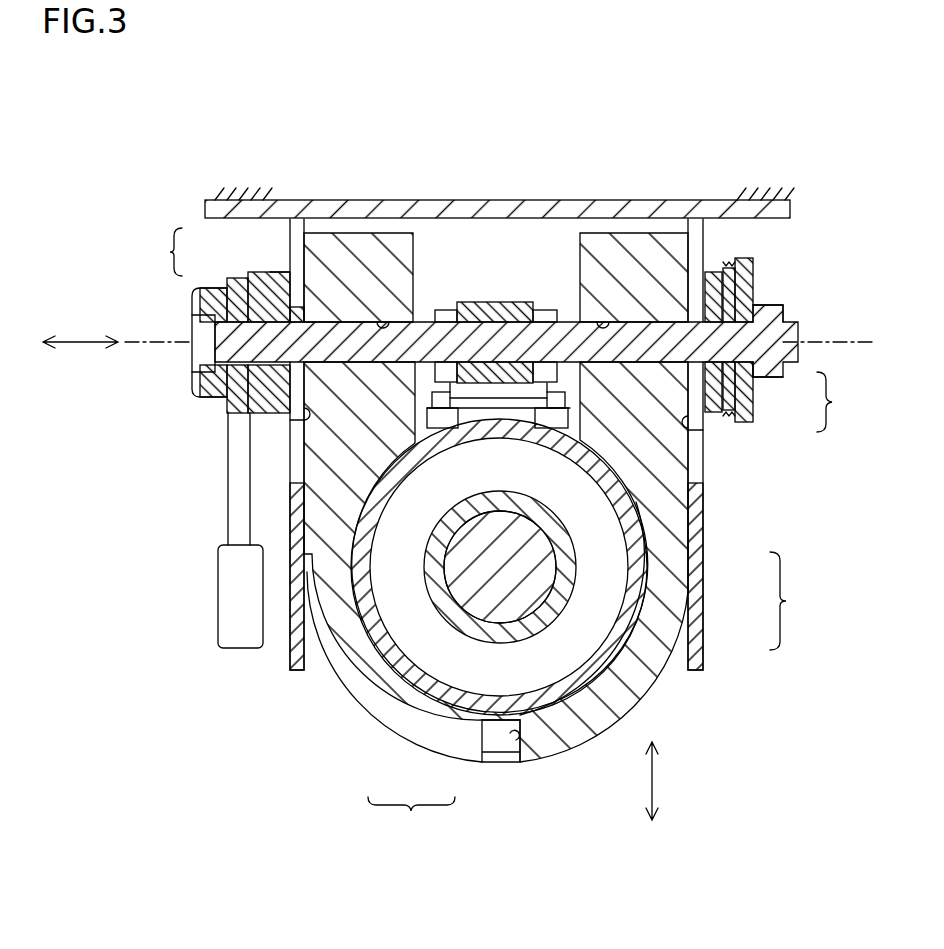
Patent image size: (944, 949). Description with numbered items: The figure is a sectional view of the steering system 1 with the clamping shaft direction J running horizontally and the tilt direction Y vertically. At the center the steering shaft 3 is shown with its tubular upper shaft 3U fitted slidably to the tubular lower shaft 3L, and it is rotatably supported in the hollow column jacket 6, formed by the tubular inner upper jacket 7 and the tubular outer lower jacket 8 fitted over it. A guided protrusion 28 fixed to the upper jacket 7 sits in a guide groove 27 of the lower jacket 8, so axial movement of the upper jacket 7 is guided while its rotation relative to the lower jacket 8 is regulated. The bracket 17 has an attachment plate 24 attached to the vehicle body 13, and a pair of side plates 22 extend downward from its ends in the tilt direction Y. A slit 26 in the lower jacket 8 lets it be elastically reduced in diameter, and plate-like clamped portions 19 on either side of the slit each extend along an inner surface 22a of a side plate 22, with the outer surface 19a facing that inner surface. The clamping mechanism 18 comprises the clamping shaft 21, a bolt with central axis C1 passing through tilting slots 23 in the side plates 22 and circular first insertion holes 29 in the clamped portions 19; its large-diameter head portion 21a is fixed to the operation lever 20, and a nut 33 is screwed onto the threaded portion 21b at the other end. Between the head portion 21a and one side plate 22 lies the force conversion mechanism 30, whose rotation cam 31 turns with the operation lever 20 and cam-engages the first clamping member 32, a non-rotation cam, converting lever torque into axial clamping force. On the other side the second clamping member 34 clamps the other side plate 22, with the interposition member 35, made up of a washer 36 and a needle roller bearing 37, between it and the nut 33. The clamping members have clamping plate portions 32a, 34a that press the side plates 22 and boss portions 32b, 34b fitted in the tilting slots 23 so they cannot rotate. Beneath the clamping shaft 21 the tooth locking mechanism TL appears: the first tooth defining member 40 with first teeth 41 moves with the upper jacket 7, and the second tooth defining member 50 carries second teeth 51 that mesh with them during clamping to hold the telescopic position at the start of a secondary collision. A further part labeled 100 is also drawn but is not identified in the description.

The steering system 1 is at (816, 180).
The steering shaft 3 is at (787, 601).
The lower shaft 3L is at (533, 568).
The upper shaft 3U is at (557, 607).
The column jacket 6 is at (411, 816).
The upper jacket 7 is at (443, 702).
The lower jacket 8 is at (388, 707).
The vehicle body 13 is at (220, 198).
The bracket 17 is at (551, 198).
The clamping mechanism 18 is at (174, 375).
The clamped portions 19 is at (398, 247).
The outer surface 19a is at (303, 447).
The operation lever 20 is at (238, 524).
The clamping shaft 21 is at (192, 356).
The head portion 21a is at (198, 298).
The threaded portion 21b is at (783, 313).
The side plates 22 is at (297, 262).
The inner surface 22a is at (300, 414).
The tilting slots 23 is at (300, 480).
The attachment plate 24 is at (460, 208).
The slit 26 is at (525, 240).
The guide groove 27 is at (516, 740).
The guided protrusion 28 is at (495, 745).
The first insertion hole 29 is at (383, 320).
The force conversion mechanism 30 is at (159, 252).
The rotation cam 31 is at (238, 278).
The first clamping member 32 is at (262, 272).
The clamping plate portion 32a is at (280, 272).
The boss portion 32b is at (298, 307).
The nut 33 is at (742, 300).
The second clamping member 34 is at (713, 270).
The clamping plate portion 34a is at (716, 275).
The boss portion 34b is at (708, 300).
The interposition member 35 is at (841, 402).
The washer 36 is at (755, 388).
The needle roller bearing 37 is at (740, 403).
The first tooth defining member 40 is at (405, 414).
The first teeth 41 is at (442, 432).
The second tooth defining member 50 is at (542, 312).
The second teeth 51 is at (448, 402).
The sensor 100 is at (497, 305).
The central axis C1 is at (182, 340).
The tooth locking mechanism TL is at (465, 296).
The clamping shaft direction J is at (80, 347).
The tilt direction Y is at (658, 778).